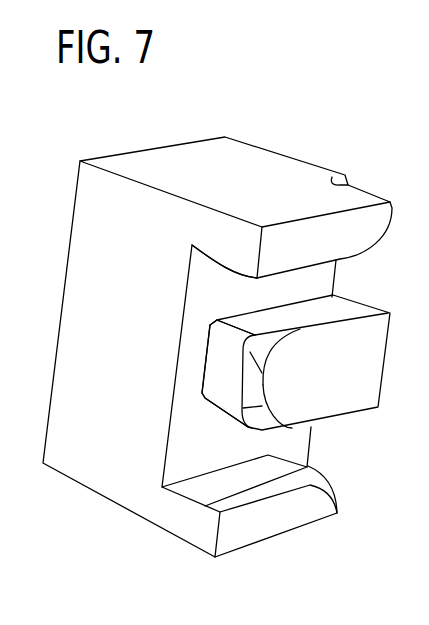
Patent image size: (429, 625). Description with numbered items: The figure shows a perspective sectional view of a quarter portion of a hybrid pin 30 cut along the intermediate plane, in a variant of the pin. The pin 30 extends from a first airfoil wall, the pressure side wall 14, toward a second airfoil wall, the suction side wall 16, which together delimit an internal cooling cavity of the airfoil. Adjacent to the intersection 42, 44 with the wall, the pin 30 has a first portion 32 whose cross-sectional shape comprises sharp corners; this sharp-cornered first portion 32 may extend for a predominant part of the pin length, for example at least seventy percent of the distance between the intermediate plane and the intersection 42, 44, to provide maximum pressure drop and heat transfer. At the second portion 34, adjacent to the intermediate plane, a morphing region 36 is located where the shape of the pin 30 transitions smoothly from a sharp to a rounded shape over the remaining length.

The pressure side wall 14 is at (215, 282).
The suction side wall 16 is at (215, 282).
The hybrid pin 30 is at (235, 374).
The first portion 32 is at (238, 337).
The second portion 34 is at (250, 383).
The morphing region 36 is at (263, 349).
The intersection 42 is at (203, 378).
The intersection 44 is at (203, 378).